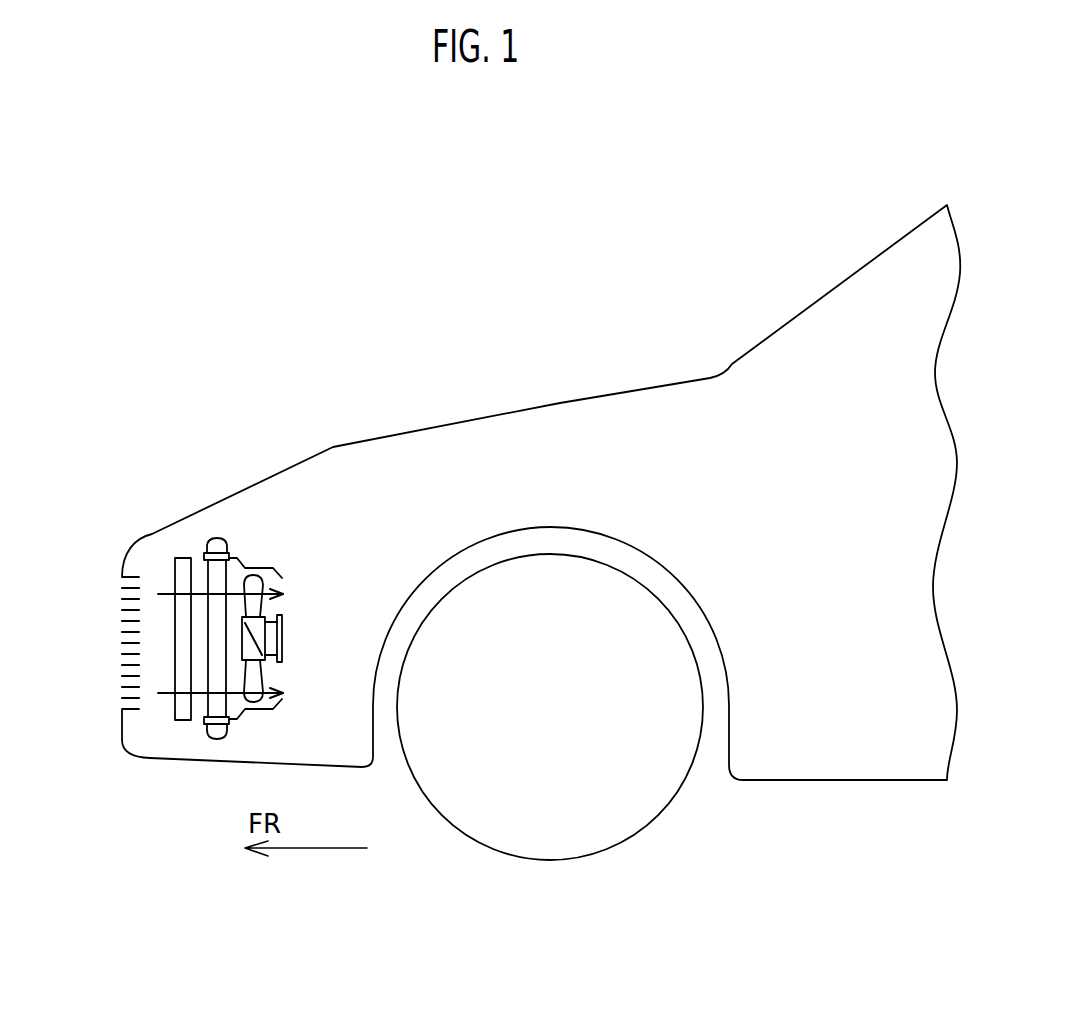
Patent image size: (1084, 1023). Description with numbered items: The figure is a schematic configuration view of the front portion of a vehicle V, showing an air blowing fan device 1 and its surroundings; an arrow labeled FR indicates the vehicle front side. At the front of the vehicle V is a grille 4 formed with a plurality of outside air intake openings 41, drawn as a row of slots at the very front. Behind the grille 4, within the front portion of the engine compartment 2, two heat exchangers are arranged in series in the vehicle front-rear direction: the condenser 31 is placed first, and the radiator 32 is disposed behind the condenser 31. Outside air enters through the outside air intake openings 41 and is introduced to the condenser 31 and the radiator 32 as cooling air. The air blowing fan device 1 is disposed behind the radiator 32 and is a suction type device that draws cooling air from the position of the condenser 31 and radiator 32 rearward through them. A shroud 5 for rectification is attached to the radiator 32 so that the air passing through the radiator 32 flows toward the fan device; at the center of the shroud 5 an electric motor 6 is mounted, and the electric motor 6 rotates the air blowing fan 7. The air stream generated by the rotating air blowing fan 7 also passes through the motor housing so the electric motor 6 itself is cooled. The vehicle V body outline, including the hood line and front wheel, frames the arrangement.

The air blowing fan device 1 is at (289, 610).
The engine compartment 2 is at (359, 600).
The grille 4 is at (91, 648).
The outside air intake openings 41 is at (127, 627).
The condenser 31 is at (172, 572).
The radiator 32 is at (208, 703).
The shroud 5 is at (291, 605).
The electric motor 6 is at (283, 637).
The air blowing fan 7 is at (263, 677).
The vehicle V is at (303, 343).